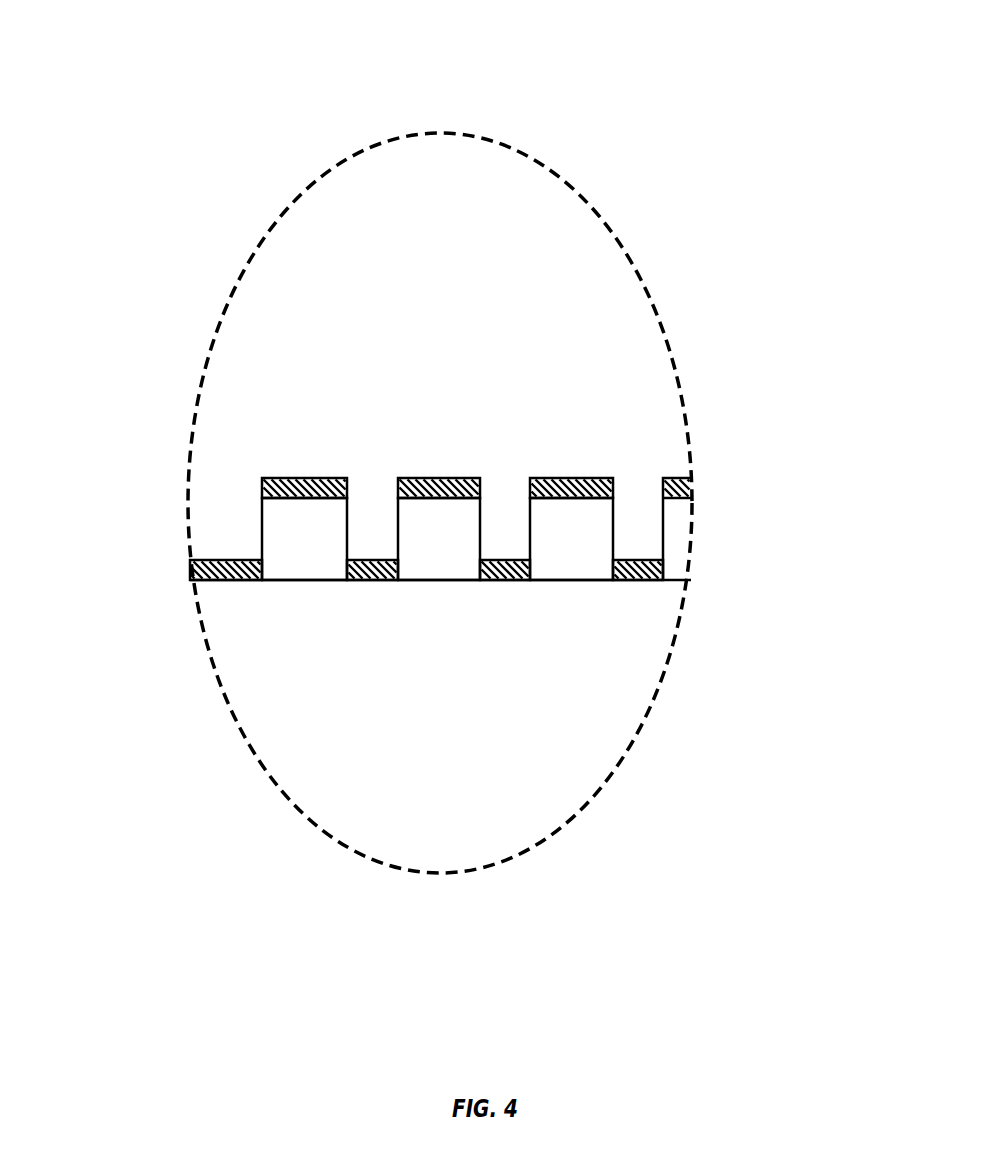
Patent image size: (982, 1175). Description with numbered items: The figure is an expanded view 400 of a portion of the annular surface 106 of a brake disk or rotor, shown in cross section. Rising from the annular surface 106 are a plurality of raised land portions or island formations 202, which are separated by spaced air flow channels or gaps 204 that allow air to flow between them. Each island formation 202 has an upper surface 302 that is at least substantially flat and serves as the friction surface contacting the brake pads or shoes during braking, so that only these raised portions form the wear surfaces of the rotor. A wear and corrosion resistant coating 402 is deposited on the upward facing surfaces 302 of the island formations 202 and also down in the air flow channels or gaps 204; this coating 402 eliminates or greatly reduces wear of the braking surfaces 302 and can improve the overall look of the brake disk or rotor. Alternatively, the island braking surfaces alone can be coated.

The expanded view 400 is at (307, 187).
The annular surface 106 is at (640, 575).
The island formations 202 is at (570, 532).
The air flow channels 204 is at (638, 530).
The upper surfaces 302 is at (571, 494).
The wear and corrosion resistant coating 402 is at (505, 562).